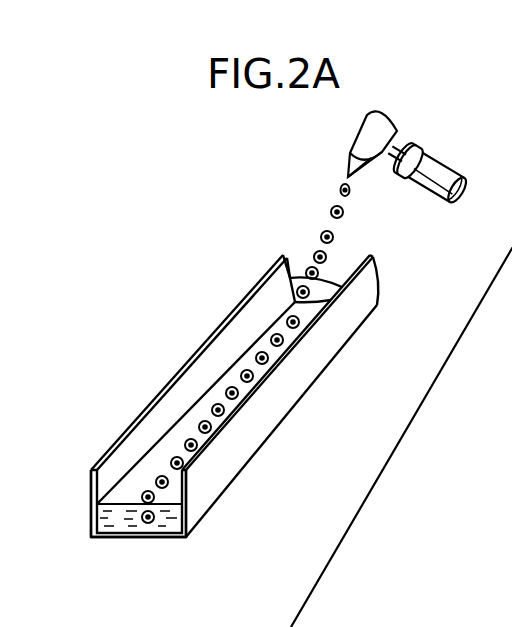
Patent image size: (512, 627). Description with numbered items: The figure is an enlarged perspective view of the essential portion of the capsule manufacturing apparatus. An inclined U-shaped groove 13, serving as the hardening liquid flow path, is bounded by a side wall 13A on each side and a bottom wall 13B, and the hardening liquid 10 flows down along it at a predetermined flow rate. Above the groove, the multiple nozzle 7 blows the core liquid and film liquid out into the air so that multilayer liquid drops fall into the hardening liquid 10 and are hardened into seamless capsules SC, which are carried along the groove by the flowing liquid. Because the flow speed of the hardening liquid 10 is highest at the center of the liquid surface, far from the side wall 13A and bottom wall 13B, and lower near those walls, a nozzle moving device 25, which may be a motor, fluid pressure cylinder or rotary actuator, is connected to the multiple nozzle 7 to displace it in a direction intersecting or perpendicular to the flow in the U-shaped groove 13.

The multiple nozzle 7 is at (358, 140).
The nozzle moving device 25 is at (443, 159).
The U-shaped groove 13 is at (280, 417).
The side wall 13A is at (91, 483).
The bottom wall 13B is at (127, 538).
The hardening liquid 10 is at (168, 514).
The seamless capsule SC is at (168, 485).